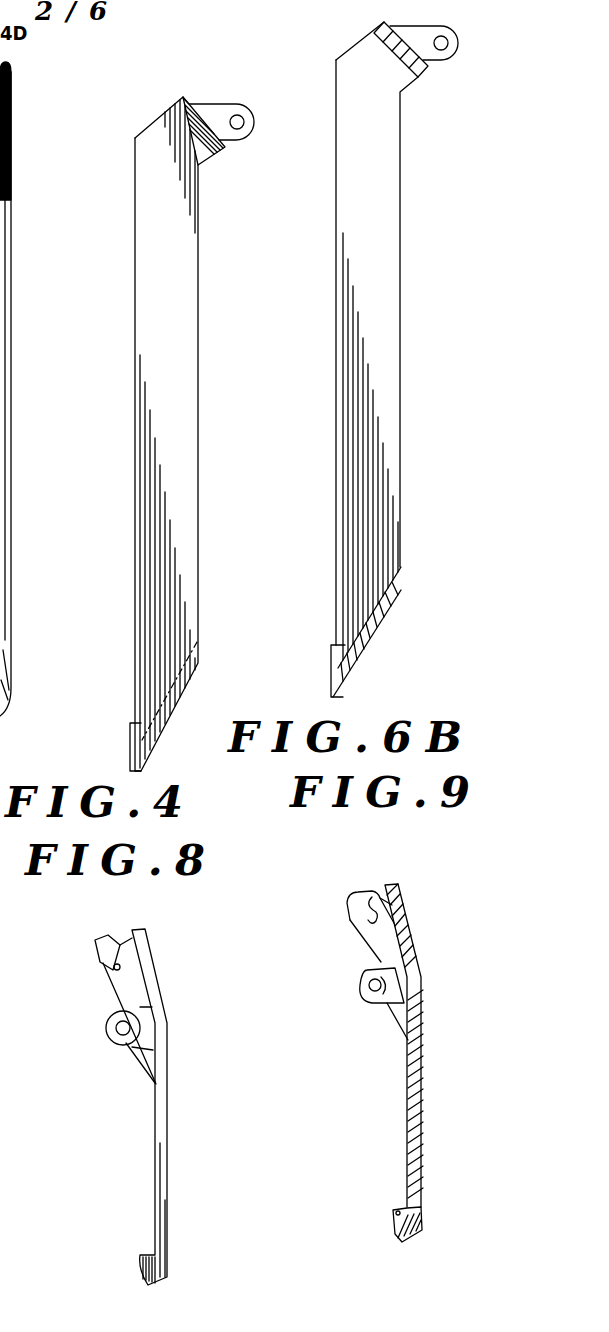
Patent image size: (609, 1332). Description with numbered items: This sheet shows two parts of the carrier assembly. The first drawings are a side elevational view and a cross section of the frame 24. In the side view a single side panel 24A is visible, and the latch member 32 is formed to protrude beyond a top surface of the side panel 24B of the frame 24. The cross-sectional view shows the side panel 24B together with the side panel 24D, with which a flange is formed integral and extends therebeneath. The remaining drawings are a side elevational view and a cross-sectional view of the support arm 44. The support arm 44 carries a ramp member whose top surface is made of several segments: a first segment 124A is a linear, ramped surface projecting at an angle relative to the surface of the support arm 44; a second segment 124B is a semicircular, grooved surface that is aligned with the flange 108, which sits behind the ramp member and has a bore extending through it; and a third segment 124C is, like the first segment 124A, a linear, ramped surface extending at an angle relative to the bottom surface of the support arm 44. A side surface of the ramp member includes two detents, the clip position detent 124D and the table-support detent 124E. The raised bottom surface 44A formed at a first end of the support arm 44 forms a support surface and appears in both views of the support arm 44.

In FIG. 4, the frame 24 is at (192, 91).
In FIG. 4, the side panel 24A is at (153, 268).
In FIG. 6B, the side panel 24B is at (362, 650).
In FIG. 6B, the side panel 24D is at (373, 72).
In FIG. 4, the latch member 32 is at (134, 746).
In FIG. 9, the support arm 44 is at (363, 876).
In FIG. 8, the support arm 44 is at (104, 925).
In FIG. 9, the raised bottom surface 44A is at (393, 1222).
In FIG. 9, the flange 108 is at (363, 996).
In FIG. 9, the first segment of ramp member top surface 124A is at (397, 1027).
In FIG. 8, the first segment of ramp member top surface 124A is at (140, 1060).
In FIG. 9, the second segment of ramp member top surface 124B is at (366, 978).
In FIG. 8, the second segment of ramp member top surface 124B is at (115, 1045).
In FIG. 9, the third segment of ramp member top surface 124C is at (352, 922).
In FIG. 8, the third segment of ramp member top surface 124C is at (115, 995).
In FIG. 9, the clip position detent 124D is at (396, 902).
In FIG. 8, the clip position detent 124D is at (113, 968).
In FIG. 9, the table-support detent 124E is at (370, 897).
In FIG. 8, the table-support detent 124E is at (95, 948).